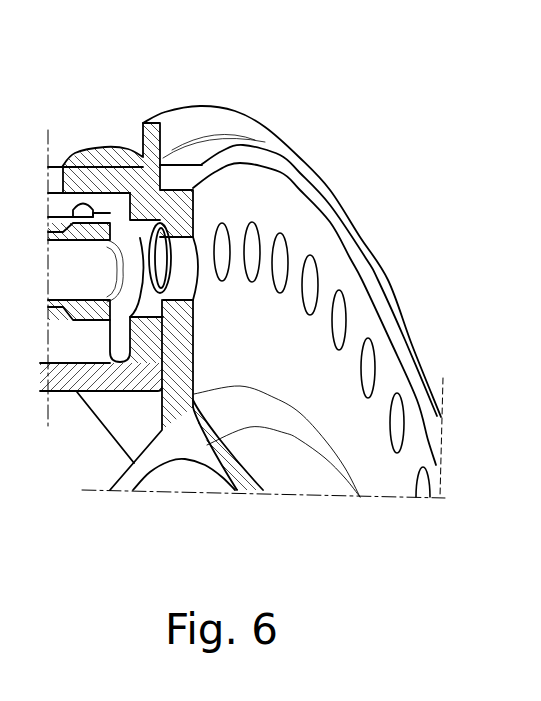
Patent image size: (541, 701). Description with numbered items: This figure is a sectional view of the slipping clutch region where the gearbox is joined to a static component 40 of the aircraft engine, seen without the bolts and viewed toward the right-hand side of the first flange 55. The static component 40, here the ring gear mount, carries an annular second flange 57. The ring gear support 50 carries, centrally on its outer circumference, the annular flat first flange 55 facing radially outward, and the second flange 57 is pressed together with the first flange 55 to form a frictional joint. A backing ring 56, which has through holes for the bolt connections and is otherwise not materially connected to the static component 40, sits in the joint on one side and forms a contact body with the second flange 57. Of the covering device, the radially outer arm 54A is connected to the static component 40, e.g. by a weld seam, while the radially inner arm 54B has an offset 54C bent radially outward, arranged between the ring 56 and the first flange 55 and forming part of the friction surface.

The static component 40 is at (183, 130).
The ring gear support 50 is at (180, 377).
The arm 54A is at (108, 177).
The other arm 54B is at (62, 385).
The offset 54C is at (147, 370).
The first flange 55 is at (363, 320).
The backing ring 56 is at (110, 370).
The second flange 57 is at (143, 210).